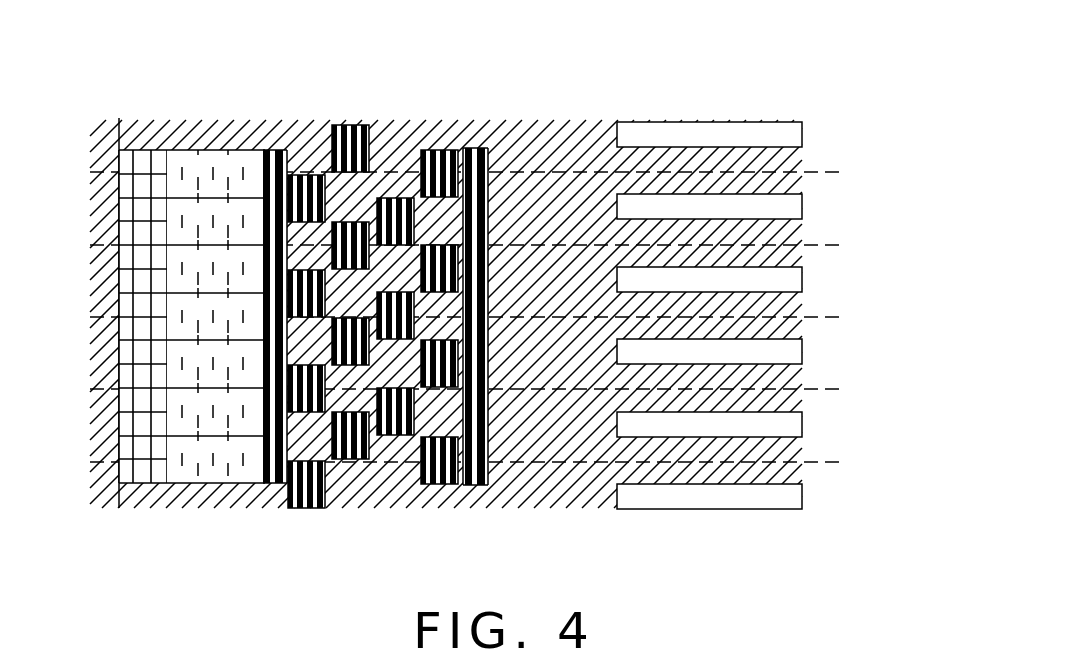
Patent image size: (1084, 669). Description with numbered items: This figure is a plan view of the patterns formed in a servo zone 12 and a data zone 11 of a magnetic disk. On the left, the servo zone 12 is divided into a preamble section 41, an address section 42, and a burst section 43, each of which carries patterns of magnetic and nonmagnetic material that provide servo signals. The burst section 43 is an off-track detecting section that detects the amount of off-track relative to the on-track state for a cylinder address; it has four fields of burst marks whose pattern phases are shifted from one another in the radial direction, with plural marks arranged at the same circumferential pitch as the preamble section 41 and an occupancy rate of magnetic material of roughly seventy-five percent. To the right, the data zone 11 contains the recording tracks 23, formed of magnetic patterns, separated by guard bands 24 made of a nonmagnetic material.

The data zone 11 is at (768, 268).
The servo zone 12 is at (506, 301).
The recording tracks 23 is at (798, 170).
The guard bands 24 is at (787, 135).
The preamble section 41 is at (119, 510).
The address section 42 is at (265, 510).
The burst section 43 is at (287, 510).